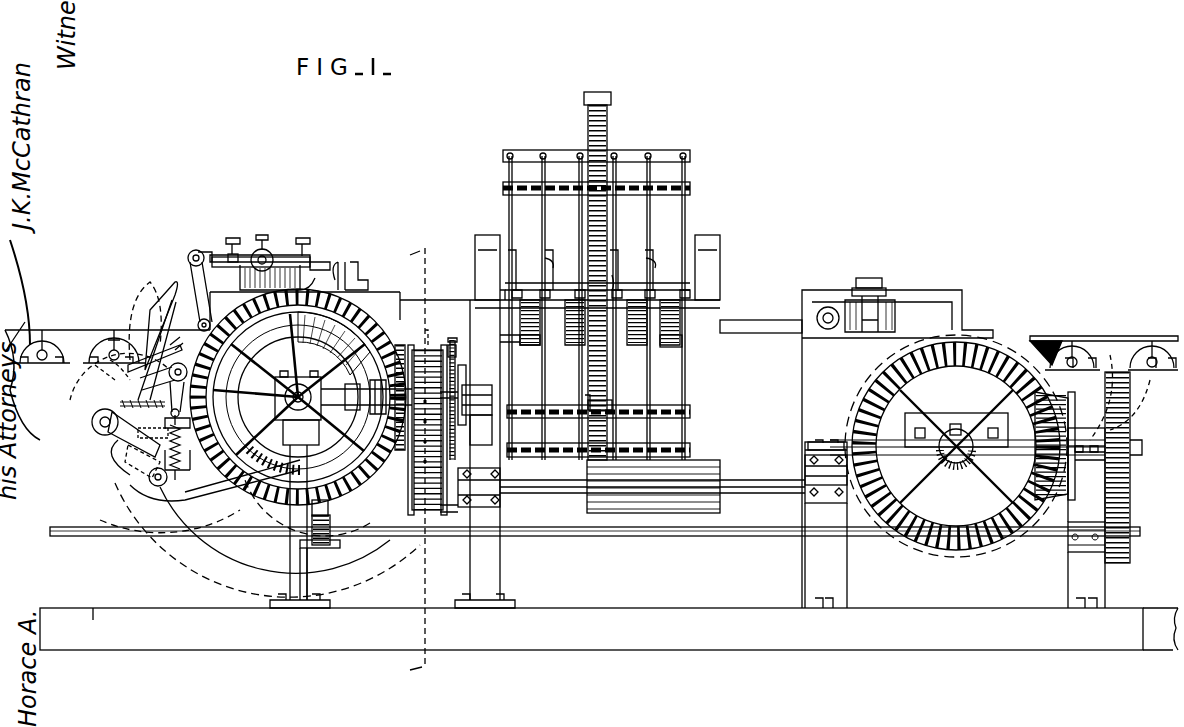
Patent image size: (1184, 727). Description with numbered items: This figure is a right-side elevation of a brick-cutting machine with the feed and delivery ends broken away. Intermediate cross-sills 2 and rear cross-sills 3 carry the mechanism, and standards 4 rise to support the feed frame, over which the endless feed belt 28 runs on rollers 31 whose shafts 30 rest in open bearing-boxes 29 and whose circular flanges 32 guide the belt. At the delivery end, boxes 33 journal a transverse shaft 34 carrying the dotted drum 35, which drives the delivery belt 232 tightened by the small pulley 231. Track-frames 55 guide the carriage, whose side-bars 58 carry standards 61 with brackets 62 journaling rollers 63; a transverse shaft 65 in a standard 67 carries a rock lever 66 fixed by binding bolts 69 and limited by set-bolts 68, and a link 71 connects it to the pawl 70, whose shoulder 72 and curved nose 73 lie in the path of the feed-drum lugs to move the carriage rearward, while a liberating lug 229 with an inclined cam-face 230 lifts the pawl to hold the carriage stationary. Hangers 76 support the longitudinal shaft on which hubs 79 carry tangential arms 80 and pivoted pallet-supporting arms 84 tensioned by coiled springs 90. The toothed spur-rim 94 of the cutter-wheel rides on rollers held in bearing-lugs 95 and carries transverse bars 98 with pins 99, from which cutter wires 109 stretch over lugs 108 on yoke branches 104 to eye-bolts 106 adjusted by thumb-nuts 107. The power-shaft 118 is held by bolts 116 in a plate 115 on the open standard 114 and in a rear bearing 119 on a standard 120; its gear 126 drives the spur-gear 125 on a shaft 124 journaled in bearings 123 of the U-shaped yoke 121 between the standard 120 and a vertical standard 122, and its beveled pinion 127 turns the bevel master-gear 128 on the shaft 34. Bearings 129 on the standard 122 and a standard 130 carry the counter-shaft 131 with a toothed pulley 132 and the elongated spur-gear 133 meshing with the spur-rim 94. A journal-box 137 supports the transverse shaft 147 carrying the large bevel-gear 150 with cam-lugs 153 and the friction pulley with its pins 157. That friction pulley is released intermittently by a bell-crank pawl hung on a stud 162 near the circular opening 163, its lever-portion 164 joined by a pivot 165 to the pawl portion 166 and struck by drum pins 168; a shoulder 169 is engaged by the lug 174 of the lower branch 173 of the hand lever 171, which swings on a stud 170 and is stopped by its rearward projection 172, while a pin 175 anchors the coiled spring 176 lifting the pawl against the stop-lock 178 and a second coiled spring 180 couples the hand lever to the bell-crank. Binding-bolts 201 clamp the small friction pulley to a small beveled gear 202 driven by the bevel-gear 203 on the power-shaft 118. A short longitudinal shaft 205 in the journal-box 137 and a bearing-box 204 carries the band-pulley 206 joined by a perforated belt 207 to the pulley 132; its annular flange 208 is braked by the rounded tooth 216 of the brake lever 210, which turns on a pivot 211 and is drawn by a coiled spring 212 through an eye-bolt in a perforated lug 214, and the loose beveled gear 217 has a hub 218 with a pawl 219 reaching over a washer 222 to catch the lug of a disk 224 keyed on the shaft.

The base 2 is at (591, 629).
The base extension 3 is at (1160, 630).
The section line 4 is at (419, 455).
The thread guide rail 28 is at (107, 327).
The guide dome 29 is at (597, 341).
The guide eye 30 is at (50, 360).
The guide rail 31 is at (1095, 345).
The thread path 32 is at (120, 341).
The wheel frame 33 is at (960, 428).
The wheel hub 34 is at (956, 463).
The wheel rim path 35 is at (852, 392).
The housing 55 is at (385, 298).
The cross bar 58 is at (760, 318).
The bearing 61 is at (830, 305).
The bolt 62 is at (880, 278).
The bearing block 63 is at (888, 292).
The pivot 65 is at (265, 254).
The bar 66 is at (298, 255).
The block 67 is at (306, 272).
The set screw 68 is at (232, 238).
The screw 69 is at (260, 232).
The lever 70 is at (180, 315).
The arm 71 is at (190, 268).
The pivot pin 72 is at (193, 325).
The link 73 is at (179, 342).
The post 76 is at (476, 272).
The carrier 79 is at (597, 279).
The finger 80 is at (624, 267).
The clamp 84 is at (600, 333).
The block 90 is at (670, 347).
The rack 94 is at (608, 130).
The guide 95 is at (580, 210).
The cross bar 98 is at (535, 166).
The top bar 99 is at (525, 142).
The bracket 104 is at (524, 258).
The hook 106 is at (557, 251).
The support 107 is at (490, 286).
The hook 108 is at (663, 252).
The rod 109 is at (509, 215).
The standard 114 is at (318, 508).
The bearing 115 is at (320, 548).
The gear 116 is at (330, 560).
The main shaft 118 is at (108, 540).
The standard 119 is at (1068, 540).
The standard 120 is at (1100, 582).
The bearing block 121 is at (810, 450).
The standard 122 is at (812, 570).
The cap 123 is at (825, 440).
The shaft 124 is at (1005, 458).
The gear 125 is at (1130, 480).
The bearing 126 is at (1130, 548).
The bevel gear 127 is at (1070, 485).
The gear wheel 128 is at (990, 365).
The bearing 129 is at (500, 495).
The standard 130 is at (470, 566).
The shaft 131 is at (748, 480).
The collar 132 is at (445, 512).
The drum 133 is at (706, 460).
The bearing 137 is at (284, 397).
The hub 147 is at (298, 384).
The gear wheel 150 is at (312, 305).
The segment 153 is at (332, 338).
The spoke 157 is at (262, 348).
The roller 162 is at (163, 376).
The cam path 163 is at (380, 508).
The slide 164 is at (152, 432).
The pivot 165 is at (155, 486).
The arm 166 is at (190, 487).
The cam 168 is at (290, 375).
The pin 169 is at (175, 399).
The pivot 170 is at (92, 428).
The link 171 is at (130, 378).
The lever 172 is at (155, 358).
The link 173 is at (126, 434).
The link 174 is at (128, 459).
The block 175 is at (186, 423).
The spring 176 is at (185, 450).
The arm 178 is at (168, 480).
The rack 180 is at (142, 414).
The dots 201 is at (443, 452).
The collar 202 is at (340, 515).
The shaft support 203 is at (290, 547).
The bracket 204 is at (500, 398).
The shaft 205 is at (366, 389).
The pulley axis 206 is at (430, 348).
The shaft 207 is at (439, 423).
The slide 208 is at (466, 370).
The block 210 is at (470, 430).
The block 211 is at (462, 452).
The block 212 is at (456, 350).
The rod 214 is at (460, 330).
The flange 216 is at (427, 430).
The pulley 217 is at (428, 430).
The gear 218 is at (388, 335).
The gear 219 is at (298, 397).
The collar 222 is at (378, 380).
The collar 224 is at (352, 384).
The bracket 229 is at (358, 262).
The bracket 230 is at (345, 262).
The shaft end 231 is at (1136, 428).
The guide bracket 232 is at (1160, 345).